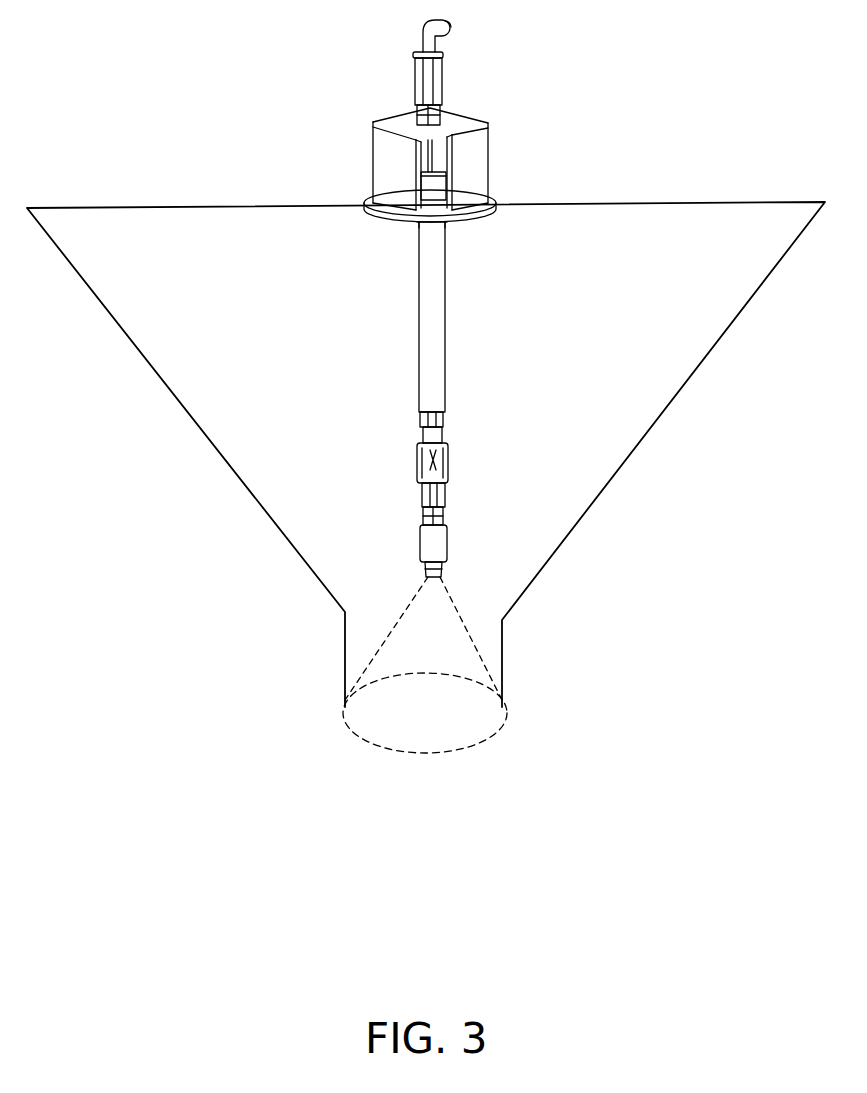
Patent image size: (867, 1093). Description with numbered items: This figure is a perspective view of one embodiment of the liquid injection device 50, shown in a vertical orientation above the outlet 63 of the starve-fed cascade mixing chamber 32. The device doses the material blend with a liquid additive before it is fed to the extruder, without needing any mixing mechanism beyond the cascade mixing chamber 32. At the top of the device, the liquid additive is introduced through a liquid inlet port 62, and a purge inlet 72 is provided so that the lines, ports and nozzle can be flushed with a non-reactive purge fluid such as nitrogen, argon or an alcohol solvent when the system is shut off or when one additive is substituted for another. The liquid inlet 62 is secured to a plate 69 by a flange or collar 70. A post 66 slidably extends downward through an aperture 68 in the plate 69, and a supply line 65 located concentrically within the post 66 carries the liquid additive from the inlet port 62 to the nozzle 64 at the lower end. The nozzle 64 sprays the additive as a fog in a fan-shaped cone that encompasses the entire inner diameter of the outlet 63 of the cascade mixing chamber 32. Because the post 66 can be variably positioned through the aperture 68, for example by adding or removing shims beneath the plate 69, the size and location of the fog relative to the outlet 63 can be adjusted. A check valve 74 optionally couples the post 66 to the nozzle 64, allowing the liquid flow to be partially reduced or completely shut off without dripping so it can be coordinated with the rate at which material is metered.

The cascade mixing chamber 32 is at (660, 242).
The liquid injection device 50 is at (382, 82).
The liquid inlet port 62 is at (440, 82).
The outlet 63 is at (502, 662).
The nozzle 64 is at (445, 572).
The supply line 65 is at (433, 163).
The post 66 is at (447, 327).
The aperture 68 is at (410, 219).
The plate 69 is at (493, 208).
The flange or collar 70 is at (388, 158).
The purge inlet 72 is at (450, 33).
The check valve 74 is at (447, 465).